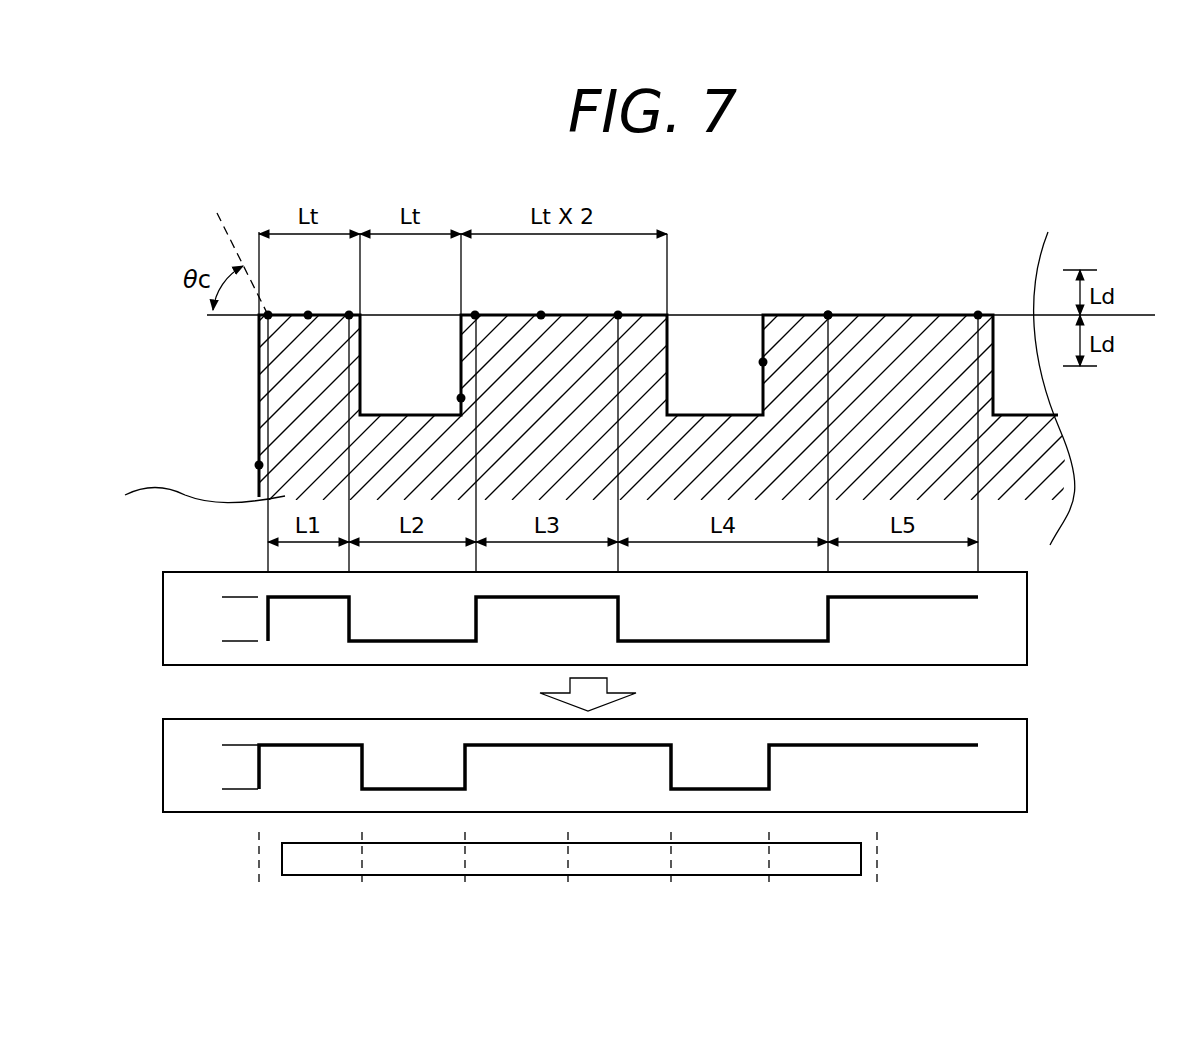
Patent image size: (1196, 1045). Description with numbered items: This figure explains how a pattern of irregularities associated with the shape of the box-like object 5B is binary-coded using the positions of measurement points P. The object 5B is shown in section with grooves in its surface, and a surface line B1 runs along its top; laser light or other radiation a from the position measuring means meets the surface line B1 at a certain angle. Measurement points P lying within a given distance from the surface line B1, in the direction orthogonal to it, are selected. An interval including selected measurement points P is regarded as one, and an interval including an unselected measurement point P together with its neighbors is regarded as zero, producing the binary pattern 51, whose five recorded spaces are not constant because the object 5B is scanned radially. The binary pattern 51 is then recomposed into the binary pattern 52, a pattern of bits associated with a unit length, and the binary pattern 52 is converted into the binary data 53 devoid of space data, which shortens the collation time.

The box-like object 5B is at (259, 410).
The binary pattern 51 is at (163, 613).
The binary pattern 52 is at (163, 761).
The binary data 53 is at (282, 857).
The radiation a is at (222, 232).
The measurement point P is at (828, 315).
The surface line B1 is at (698, 318).